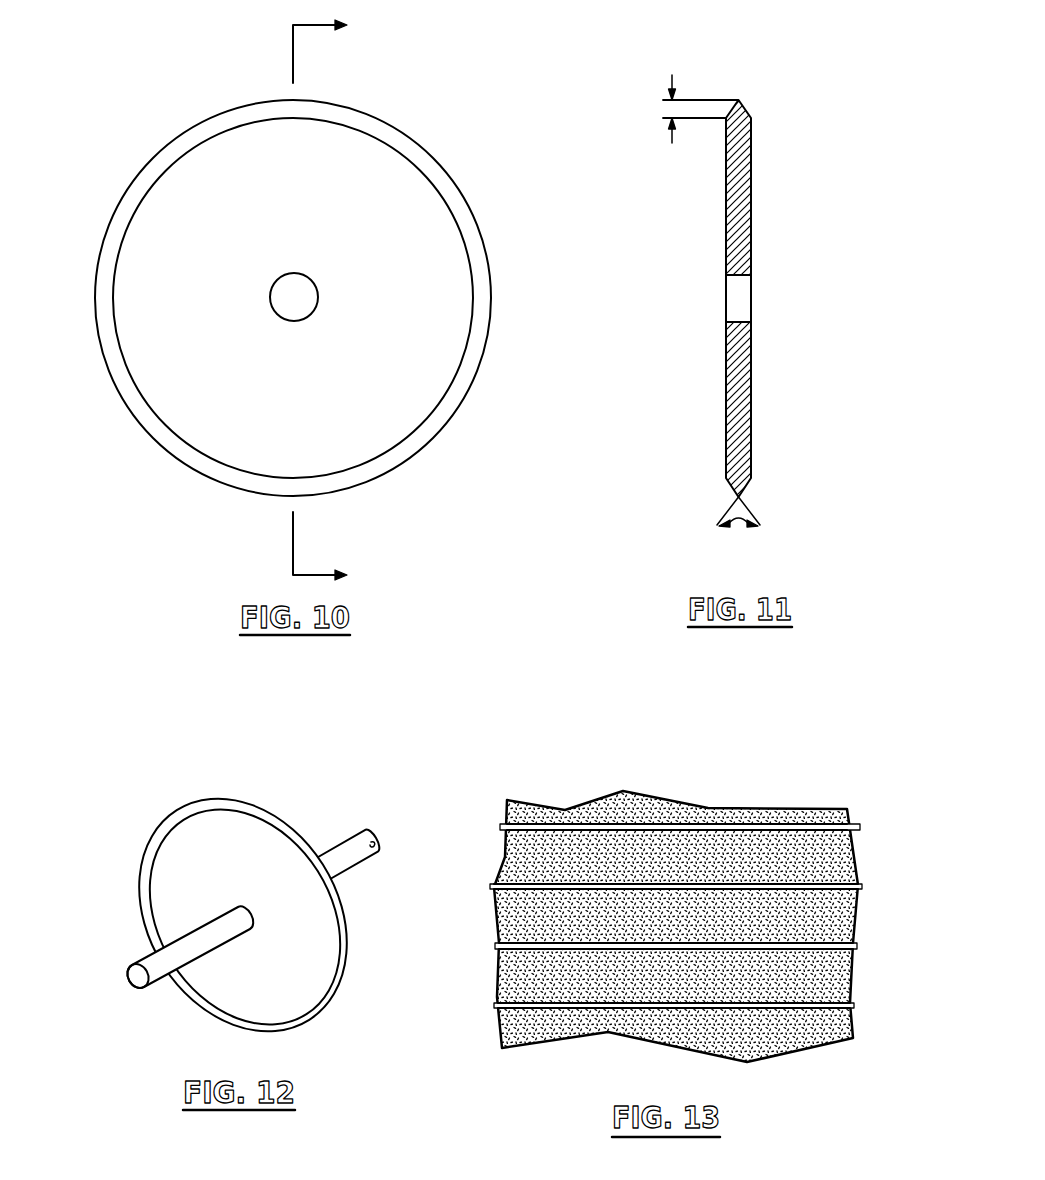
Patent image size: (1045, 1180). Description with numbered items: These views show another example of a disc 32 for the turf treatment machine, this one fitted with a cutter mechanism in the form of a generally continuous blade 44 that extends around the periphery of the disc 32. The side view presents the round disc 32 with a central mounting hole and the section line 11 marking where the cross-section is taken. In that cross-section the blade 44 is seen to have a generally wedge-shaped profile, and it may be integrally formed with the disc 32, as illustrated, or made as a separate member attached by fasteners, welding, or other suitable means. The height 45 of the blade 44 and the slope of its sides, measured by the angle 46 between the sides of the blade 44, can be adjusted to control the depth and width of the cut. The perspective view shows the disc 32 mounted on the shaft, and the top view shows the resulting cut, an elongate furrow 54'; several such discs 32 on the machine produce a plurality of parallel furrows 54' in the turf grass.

In FIG. 10, the section line 11- 11 is at (334, 299).
In FIG. 10, the disc 32 is at (271, 294).
In FIG. 11, the disc 32 is at (765, 254).
In FIG. 12, the disc 32 is at (236, 910).
In FIG. 10, the continuous blade 44 is at (433, 163).
In FIG. 11, the continuous blade 44 is at (746, 110).
In FIG. 12, the continuous blade 44 is at (342, 968).
In FIG. 11, the blade height 45 is at (672, 131).
In FIG. 11, the blade angle 46 is at (738, 525).
In FIG. 13, the elongate furrow 54' is at (676, 901).